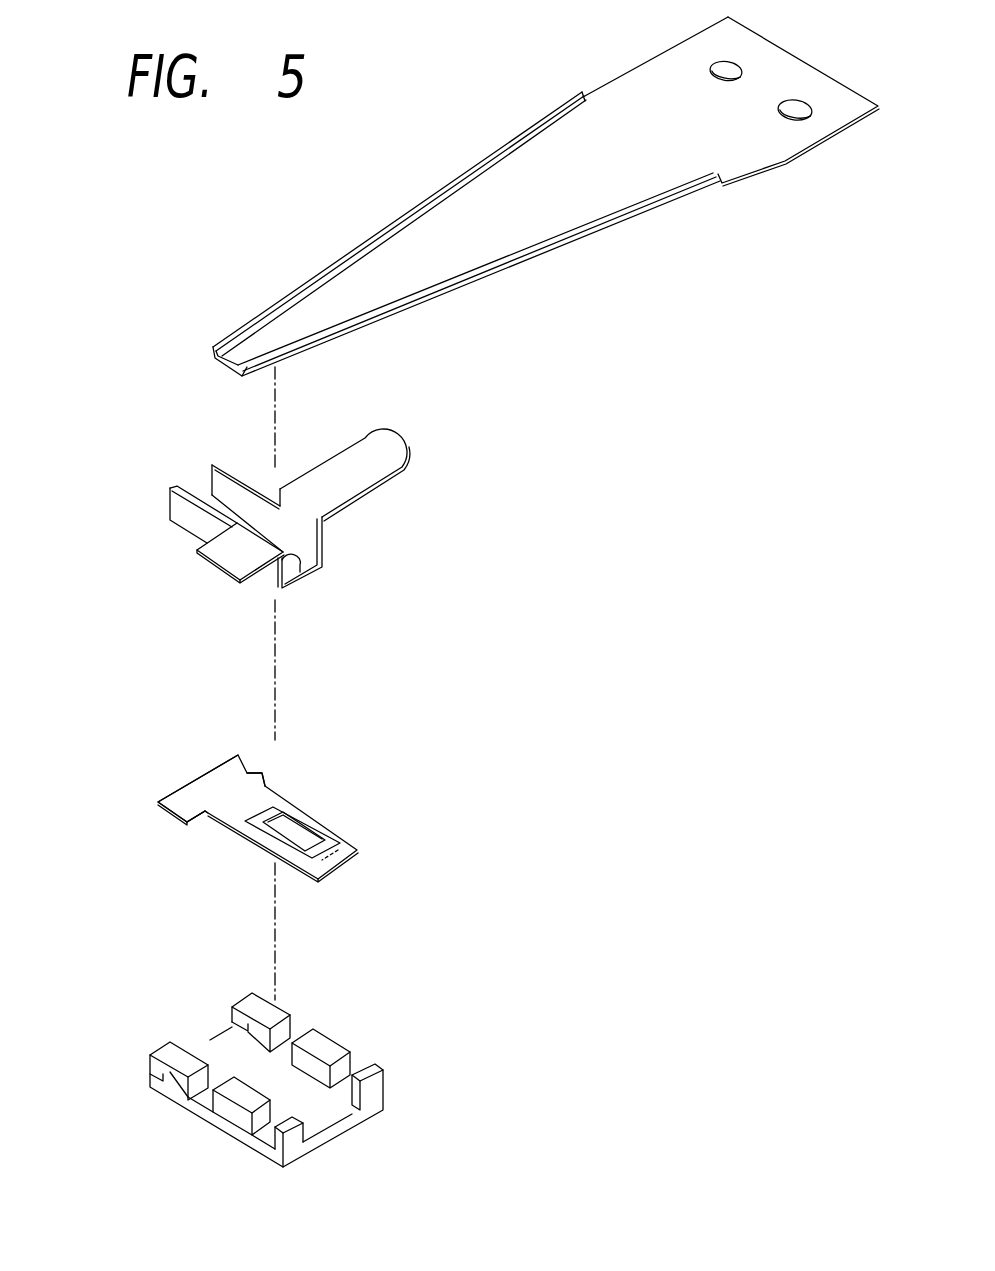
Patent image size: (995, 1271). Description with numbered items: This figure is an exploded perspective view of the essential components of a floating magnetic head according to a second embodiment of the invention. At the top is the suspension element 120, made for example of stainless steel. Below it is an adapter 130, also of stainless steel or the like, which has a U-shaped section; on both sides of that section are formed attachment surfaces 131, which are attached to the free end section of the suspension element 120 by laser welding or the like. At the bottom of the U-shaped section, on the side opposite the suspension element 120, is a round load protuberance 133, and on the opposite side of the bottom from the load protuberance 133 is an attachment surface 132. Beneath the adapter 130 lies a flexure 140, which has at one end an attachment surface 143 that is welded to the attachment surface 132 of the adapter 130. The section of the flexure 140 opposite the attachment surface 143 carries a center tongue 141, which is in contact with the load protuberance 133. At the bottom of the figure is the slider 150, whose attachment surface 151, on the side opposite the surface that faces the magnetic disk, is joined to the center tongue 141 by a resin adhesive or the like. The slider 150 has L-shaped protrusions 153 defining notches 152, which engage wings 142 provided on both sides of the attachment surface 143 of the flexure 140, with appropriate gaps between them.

The suspension element 120 is at (647, 97).
The adapter 130 is at (410, 440).
The attachment surfaces 131 is at (360, 475).
The attachment surface 132 is at (197, 522).
The load protuberance 133 is at (300, 573).
The flexure 140 is at (362, 845).
The center tongue 141 is at (287, 830).
The wings 142 is at (247, 772).
The attachment surface 143 is at (203, 787).
The slider 150 is at (348, 1035).
The attachment surface 151 is at (248, 1030).
The notches 152 is at (218, 1055).
The L-shaped protrusions 153 is at (165, 1050).